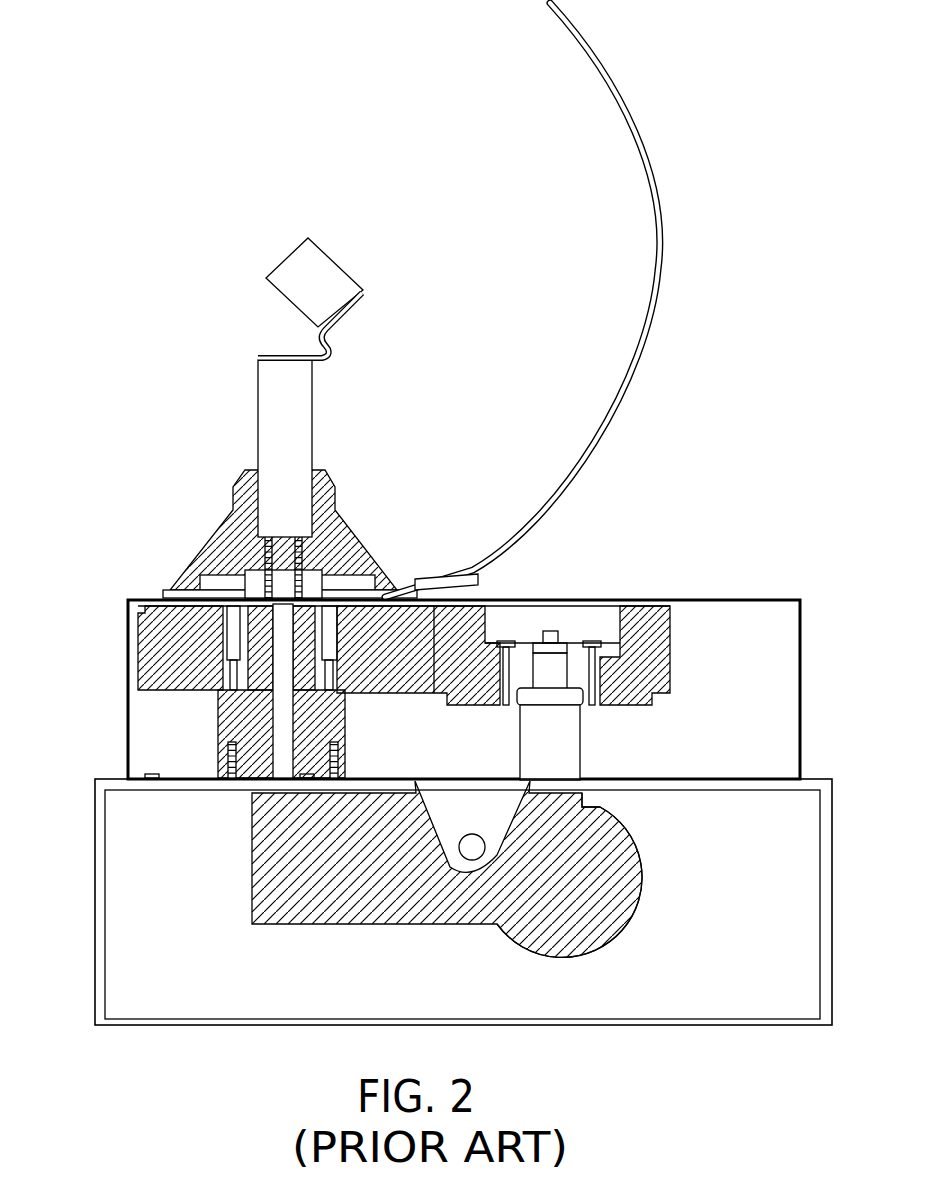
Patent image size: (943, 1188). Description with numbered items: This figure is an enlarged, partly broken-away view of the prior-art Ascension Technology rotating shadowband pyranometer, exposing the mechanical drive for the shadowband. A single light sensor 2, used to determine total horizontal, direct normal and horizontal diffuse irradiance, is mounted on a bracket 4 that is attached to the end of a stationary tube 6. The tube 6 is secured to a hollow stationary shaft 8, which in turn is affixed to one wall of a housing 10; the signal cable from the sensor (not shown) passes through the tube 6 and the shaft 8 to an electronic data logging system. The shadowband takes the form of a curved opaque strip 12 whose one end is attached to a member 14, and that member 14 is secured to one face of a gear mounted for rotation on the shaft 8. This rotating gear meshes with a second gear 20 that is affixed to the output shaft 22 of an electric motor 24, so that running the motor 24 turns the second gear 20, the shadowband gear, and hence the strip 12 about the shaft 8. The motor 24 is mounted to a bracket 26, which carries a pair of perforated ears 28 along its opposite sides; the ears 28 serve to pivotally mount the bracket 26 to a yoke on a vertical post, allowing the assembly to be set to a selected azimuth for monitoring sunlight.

The light sensor 2 is at (285, 264).
The bracket 4 is at (353, 302).
The stationary tube 6 is at (267, 423).
The hollow stationary shaft 8 is at (215, 722).
The housing 10 is at (128, 632).
The curved opaque strip 12 is at (637, 363).
The member 14 is at (167, 598).
The second gear 20 is at (650, 665).
The output shaft 22 is at (582, 738).
The electric motor 24 is at (312, 924).
The bracket 26 is at (103, 905).
The perforated ears 28 is at (525, 817).